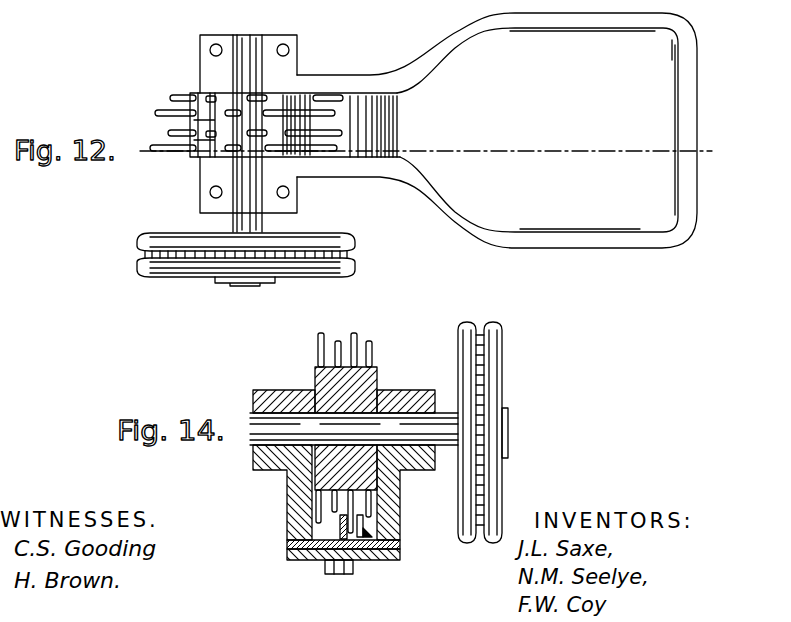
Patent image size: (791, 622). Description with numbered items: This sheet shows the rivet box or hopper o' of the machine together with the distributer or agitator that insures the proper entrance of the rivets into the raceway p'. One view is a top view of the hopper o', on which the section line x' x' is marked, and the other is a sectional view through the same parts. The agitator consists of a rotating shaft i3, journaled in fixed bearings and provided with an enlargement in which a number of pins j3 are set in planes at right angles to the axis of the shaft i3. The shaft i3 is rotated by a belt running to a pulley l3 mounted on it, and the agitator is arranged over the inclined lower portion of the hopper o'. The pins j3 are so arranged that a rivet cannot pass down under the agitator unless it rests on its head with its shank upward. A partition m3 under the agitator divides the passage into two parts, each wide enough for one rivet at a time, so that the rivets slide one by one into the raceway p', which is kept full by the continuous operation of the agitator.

In FIG. 12, the rivet-hopper o' is at (497, 130).
In FIG. 12, the section line x' x' is at (425, 151).
In FIG. 12, the rotating shaft i3 is at (272, 95).
In FIG. 14, the rotating shaft i3 is at (376, 390).
In FIG. 12, the pins j3 is at (329, 95).
In FIG. 14, the pins j3 is at (372, 352).
In FIG. 12, the pulley l3 is at (350, 259).
In FIG. 14, the pulley l3 is at (503, 350).
In FIG. 14, the partition m3 is at (358, 561).
In FIG. 14, the raceway p' is at (336, 570).